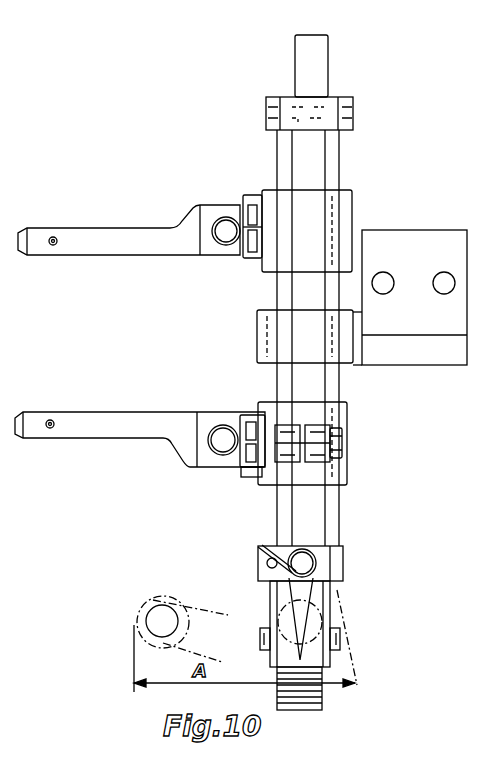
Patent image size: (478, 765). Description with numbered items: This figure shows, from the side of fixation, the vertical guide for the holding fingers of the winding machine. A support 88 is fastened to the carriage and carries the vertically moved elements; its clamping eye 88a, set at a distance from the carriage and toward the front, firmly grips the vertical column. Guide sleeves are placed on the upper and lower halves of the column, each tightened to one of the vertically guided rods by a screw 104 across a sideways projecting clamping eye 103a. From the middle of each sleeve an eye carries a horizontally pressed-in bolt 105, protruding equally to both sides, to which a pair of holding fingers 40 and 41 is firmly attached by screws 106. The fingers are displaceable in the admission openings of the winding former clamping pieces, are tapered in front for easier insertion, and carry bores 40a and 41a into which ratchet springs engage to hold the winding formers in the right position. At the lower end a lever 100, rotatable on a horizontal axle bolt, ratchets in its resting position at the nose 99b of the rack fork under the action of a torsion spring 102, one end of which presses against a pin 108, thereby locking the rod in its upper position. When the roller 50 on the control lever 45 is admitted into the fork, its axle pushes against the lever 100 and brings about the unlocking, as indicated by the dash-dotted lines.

The holding finger 40 is at (124, 440).
The bore in holding finger 40a is at (50, 430).
The holding finger 41 is at (128, 233).
The bore in holding finger 41a is at (53, 237).
The control lever 45 is at (203, 614).
The roller 50 is at (158, 601).
The support 88 is at (395, 354).
The clamping eye 88a is at (257, 333).
The nose 99b is at (276, 588).
The lever 100 is at (307, 619).
The torsion spring 102 is at (286, 566).
The clamping eye 103a is at (340, 464).
The screw 104 is at (343, 444).
The bolt 105 is at (228, 225).
The screw 106 is at (254, 195).
The pin 108 is at (266, 562).